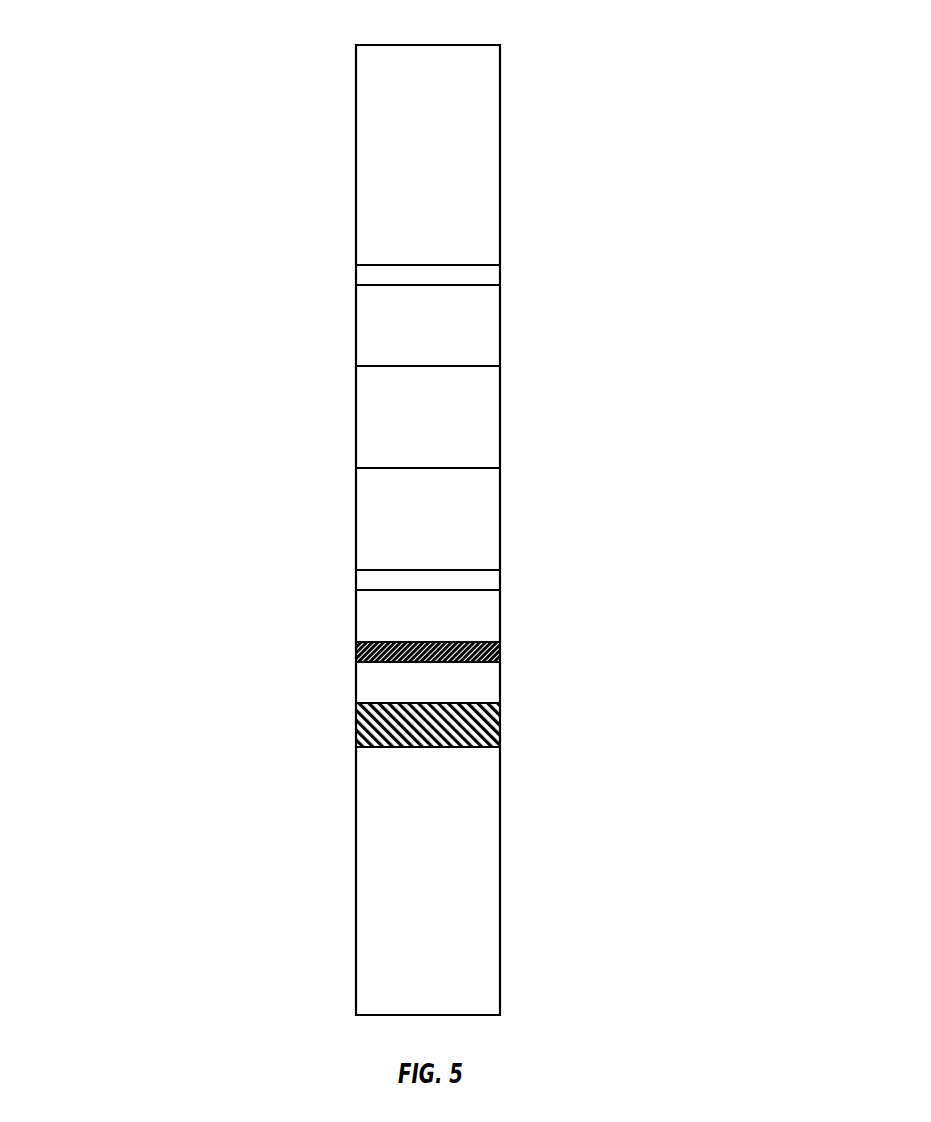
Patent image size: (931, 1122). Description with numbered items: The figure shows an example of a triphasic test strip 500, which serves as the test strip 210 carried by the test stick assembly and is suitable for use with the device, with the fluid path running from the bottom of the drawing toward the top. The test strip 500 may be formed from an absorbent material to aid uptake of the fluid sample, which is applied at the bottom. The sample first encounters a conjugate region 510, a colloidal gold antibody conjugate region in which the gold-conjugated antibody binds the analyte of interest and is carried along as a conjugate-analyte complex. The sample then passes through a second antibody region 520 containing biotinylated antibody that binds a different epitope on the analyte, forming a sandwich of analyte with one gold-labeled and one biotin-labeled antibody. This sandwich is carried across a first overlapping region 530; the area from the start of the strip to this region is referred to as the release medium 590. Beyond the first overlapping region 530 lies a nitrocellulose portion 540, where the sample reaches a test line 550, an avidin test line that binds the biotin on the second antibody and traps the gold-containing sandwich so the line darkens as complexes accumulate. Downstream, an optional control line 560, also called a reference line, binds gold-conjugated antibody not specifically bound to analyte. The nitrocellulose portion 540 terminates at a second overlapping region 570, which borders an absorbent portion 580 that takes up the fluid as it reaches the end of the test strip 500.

The test strip 210 is at (438, 511).
The test strip 500 is at (205, 48).
The conjugate region 510 is at (487, 732).
The second antibody region 520 is at (500, 651).
The first overlapping region 530 is at (487, 580).
The nitrocellulose portion 540 is at (573, 283).
The test line 550 is at (483, 468).
The control line 560 is at (483, 366).
The second overlapping region 570 is at (483, 265).
The absorbent portion 580 is at (573, 45).
The release medium 590 is at (573, 588).